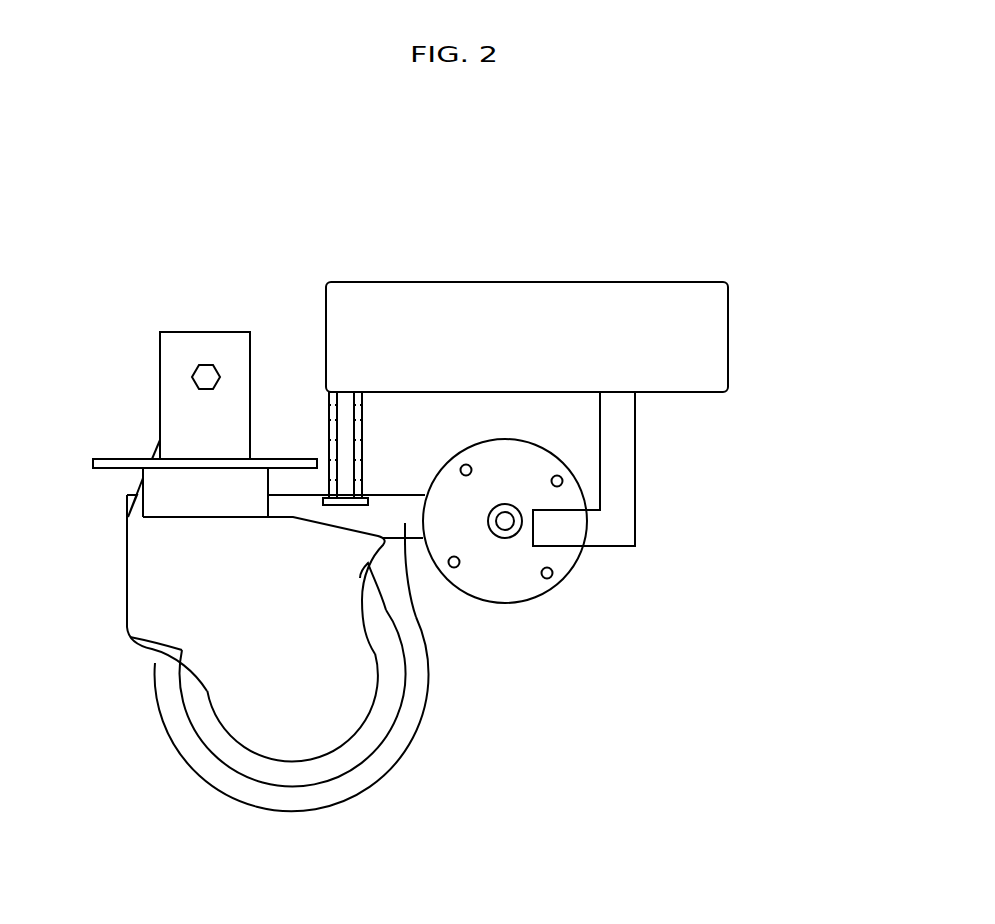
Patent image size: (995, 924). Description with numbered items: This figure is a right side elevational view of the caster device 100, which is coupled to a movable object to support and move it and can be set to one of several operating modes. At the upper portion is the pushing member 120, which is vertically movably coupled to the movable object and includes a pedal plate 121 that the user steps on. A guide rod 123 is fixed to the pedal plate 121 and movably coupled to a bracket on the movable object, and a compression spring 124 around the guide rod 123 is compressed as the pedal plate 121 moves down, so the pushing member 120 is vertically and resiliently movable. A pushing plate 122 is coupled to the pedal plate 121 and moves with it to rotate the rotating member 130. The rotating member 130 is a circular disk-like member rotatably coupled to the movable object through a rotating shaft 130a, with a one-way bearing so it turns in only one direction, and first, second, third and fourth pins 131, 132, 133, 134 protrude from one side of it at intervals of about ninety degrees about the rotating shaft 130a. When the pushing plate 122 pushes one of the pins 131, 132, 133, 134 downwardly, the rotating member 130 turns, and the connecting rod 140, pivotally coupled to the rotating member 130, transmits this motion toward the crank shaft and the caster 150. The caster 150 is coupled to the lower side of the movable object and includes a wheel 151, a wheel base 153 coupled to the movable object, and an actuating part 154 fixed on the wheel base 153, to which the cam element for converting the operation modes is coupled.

The caster device 100 is at (357, 206).
The pushing member 120 is at (803, 342).
The pedal plate 121 is at (728, 339).
The pushing plate 122 is at (642, 440).
The guide rod 123 is at (342, 418).
The compression spring 124 is at (363, 403).
The rotating member 130 is at (570, 563).
The rotating shaft 130a is at (507, 535).
The first pin 131 is at (562, 479).
The second pin 132 is at (550, 578).
The third pin 133 is at (455, 568).
The fourth pin 134 is at (463, 465).
The connecting rod 140 is at (423, 540).
The caster 150 is at (108, 588).
The wheel 151 is at (173, 735).
The wheel base 153 is at (103, 460).
The actuating part 154 is at (206, 340).